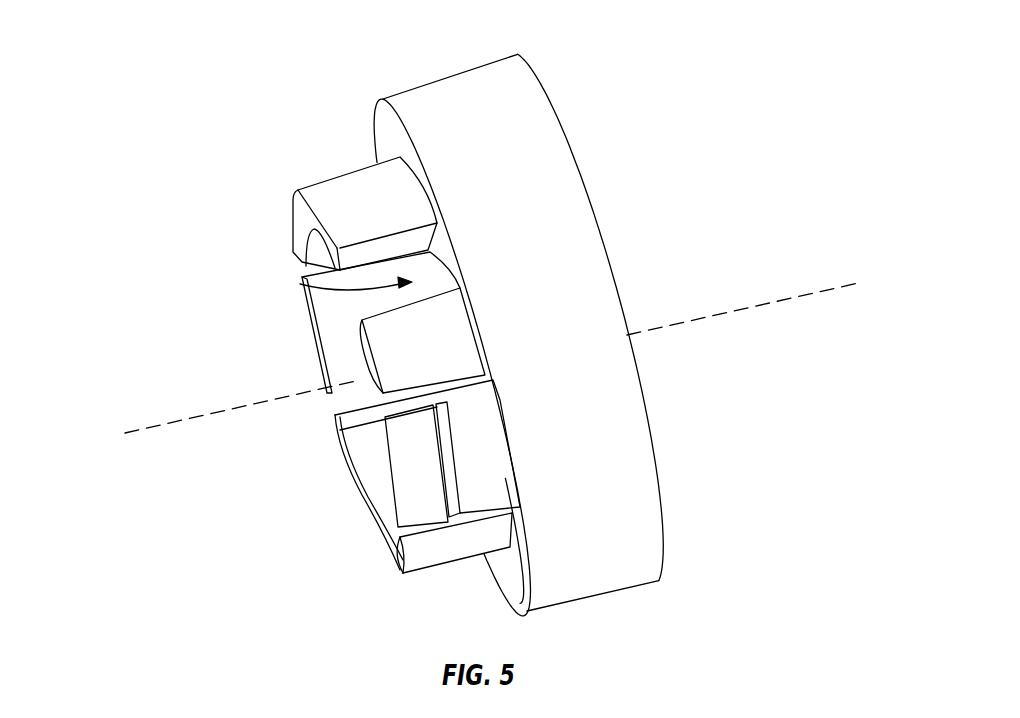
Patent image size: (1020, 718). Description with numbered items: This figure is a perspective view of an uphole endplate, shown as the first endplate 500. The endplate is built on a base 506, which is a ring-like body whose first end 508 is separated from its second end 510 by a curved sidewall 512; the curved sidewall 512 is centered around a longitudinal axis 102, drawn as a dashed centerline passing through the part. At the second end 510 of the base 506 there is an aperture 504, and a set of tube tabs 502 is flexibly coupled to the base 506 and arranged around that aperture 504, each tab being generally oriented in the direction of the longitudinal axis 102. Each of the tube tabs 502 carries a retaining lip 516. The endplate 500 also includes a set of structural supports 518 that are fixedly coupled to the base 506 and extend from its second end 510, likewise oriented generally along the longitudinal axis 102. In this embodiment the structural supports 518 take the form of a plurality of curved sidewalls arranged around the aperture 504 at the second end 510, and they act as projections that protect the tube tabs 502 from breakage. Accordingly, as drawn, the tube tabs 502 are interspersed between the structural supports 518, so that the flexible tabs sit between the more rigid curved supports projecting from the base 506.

The longitudinal axis 102 is at (152, 430).
The first endplate 500 is at (703, 272).
The tube tabs 502 is at (315, 333).
The aperture 504 is at (300, 284).
The base 506 is at (597, 595).
The first end 508 is at (700, 478).
The second end 510 is at (300, 445).
The curved sidewall 512 is at (458, 88).
The retaining lip 516 is at (455, 467).
The structural supports 518 is at (303, 226).